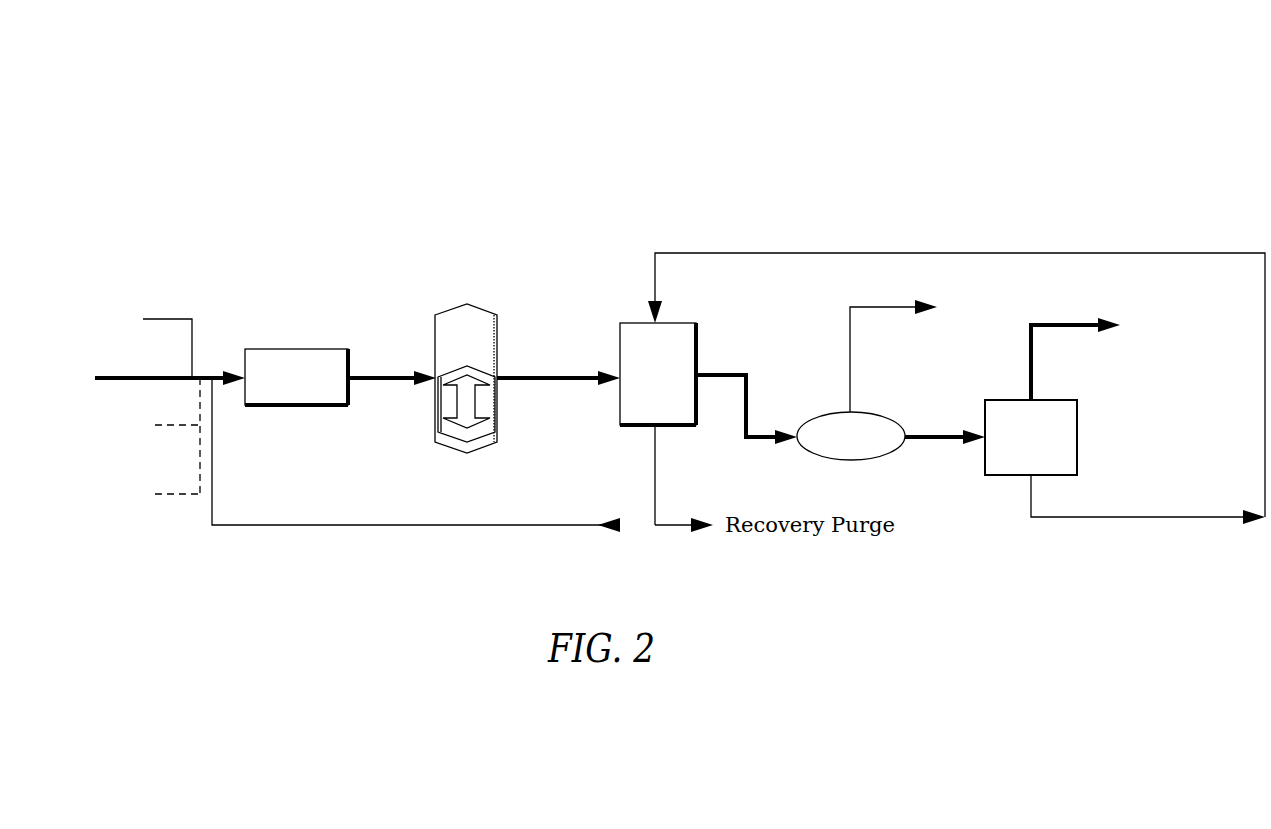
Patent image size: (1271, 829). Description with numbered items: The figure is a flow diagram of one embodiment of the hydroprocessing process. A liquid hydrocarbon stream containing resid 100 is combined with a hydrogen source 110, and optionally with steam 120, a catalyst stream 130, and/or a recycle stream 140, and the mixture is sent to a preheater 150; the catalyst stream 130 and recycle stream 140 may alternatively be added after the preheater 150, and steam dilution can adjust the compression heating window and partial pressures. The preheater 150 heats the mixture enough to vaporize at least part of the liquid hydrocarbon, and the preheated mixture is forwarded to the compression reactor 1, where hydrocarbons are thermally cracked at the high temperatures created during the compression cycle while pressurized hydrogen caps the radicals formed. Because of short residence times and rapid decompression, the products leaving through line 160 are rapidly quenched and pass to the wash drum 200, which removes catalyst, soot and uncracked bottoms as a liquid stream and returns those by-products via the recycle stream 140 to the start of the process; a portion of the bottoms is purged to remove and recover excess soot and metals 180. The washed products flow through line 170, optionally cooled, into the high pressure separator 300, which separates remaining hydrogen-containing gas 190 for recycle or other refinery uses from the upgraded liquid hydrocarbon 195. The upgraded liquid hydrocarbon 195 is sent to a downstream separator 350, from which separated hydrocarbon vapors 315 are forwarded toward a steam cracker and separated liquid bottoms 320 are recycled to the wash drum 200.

The compression reactor 1 is at (497, 430).
The liquid hydrocarbon stream containing resid 100 is at (147, 381).
The hydrogen source 110 is at (144, 345).
The steam 120 is at (156, 436).
The catalyst stream 130 is at (156, 498).
The recycle stream 140 is at (285, 525).
The preheater 150 is at (315, 391).
The line 160 is at (538, 375).
The line 170 is at (748, 397).
The purge of excess soot and metals 180 is at (667, 527).
The hydrogen-containing gas 190 is at (870, 310).
The upgraded liquid hydrocarbon 195 is at (918, 437).
The wash drum 200 is at (677, 392).
The high pressure separator 300 is at (870, 447).
The separated hydrocarbon vapors 315 is at (1052, 320).
The separated liquid bottoms 320 is at (1195, 517).
The separator 350 is at (1047, 449).